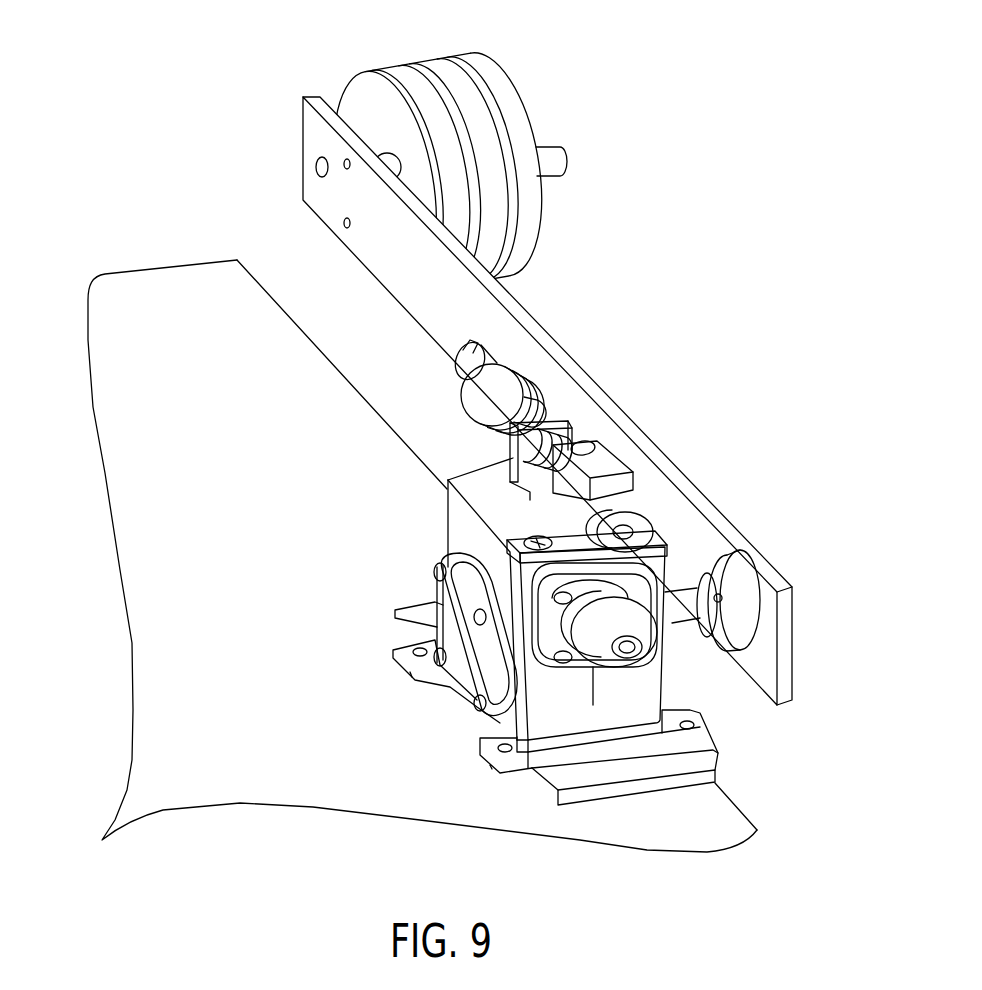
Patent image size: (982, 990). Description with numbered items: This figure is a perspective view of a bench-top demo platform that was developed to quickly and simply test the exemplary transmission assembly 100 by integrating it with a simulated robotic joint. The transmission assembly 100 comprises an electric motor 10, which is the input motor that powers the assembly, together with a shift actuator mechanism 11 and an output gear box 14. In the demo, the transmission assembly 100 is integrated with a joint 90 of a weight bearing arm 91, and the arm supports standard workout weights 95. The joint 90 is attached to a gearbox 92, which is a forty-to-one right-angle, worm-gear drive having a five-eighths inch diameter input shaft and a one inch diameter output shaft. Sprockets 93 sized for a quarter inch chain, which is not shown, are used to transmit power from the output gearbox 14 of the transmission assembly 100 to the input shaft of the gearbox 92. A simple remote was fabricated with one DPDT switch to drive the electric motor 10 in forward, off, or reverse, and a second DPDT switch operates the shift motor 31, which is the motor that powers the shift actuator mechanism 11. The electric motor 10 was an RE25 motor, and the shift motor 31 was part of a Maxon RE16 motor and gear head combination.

The electric motor 10 is at (500, 361).
The shift actuator mechanism 11 is at (492, 345).
The output gear box 14 is at (533, 414).
The shift motor 31 is at (470, 344).
The joint 90 is at (680, 613).
The weight bearing arm 91 is at (636, 433).
The gearbox 92 is at (447, 531).
The sprockets 93 is at (651, 530).
The workout weights 95 is at (518, 96).
The transmission assembly 100 is at (520, 372).